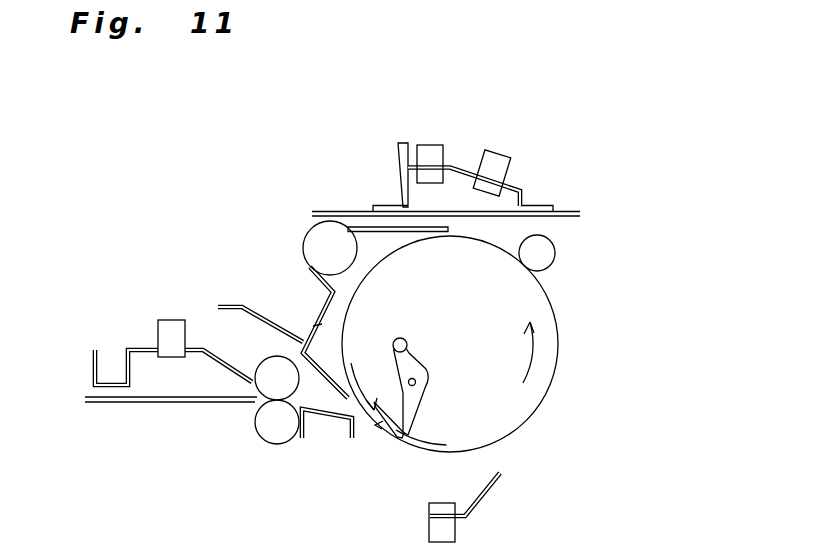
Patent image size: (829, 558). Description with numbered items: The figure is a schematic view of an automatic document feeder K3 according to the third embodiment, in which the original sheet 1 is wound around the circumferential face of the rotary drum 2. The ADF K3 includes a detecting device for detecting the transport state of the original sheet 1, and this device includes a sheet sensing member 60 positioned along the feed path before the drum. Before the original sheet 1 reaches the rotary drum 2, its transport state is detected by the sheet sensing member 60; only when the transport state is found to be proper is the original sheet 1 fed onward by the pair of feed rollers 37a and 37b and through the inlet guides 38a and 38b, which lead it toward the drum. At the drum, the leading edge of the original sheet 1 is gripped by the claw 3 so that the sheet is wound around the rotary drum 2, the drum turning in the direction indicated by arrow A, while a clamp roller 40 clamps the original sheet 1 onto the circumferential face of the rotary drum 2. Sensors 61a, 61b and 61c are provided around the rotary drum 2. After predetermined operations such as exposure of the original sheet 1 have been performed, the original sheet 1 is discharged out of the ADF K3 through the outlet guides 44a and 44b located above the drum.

The original sheet 1 is at (170, 400).
The rotary drum 2 is at (527, 403).
The claw 3 is at (377, 420).
The feed roller 37a is at (267, 378).
The feed roller 37b is at (273, 427).
The inlet guide 38a is at (320, 367).
The inlet guide 38b is at (332, 418).
The clamp roller 40 is at (553, 253).
The outlet guide 44a is at (313, 210).
The outlet guide 44b is at (357, 227).
The sheet sensing member 60 is at (172, 325).
The sensor 61a is at (450, 532).
The sensor 61b is at (500, 153).
The sensor 61c is at (437, 148).
The automatic document feeder K3 is at (572, 313).
The rotation direction A is at (514, 363).